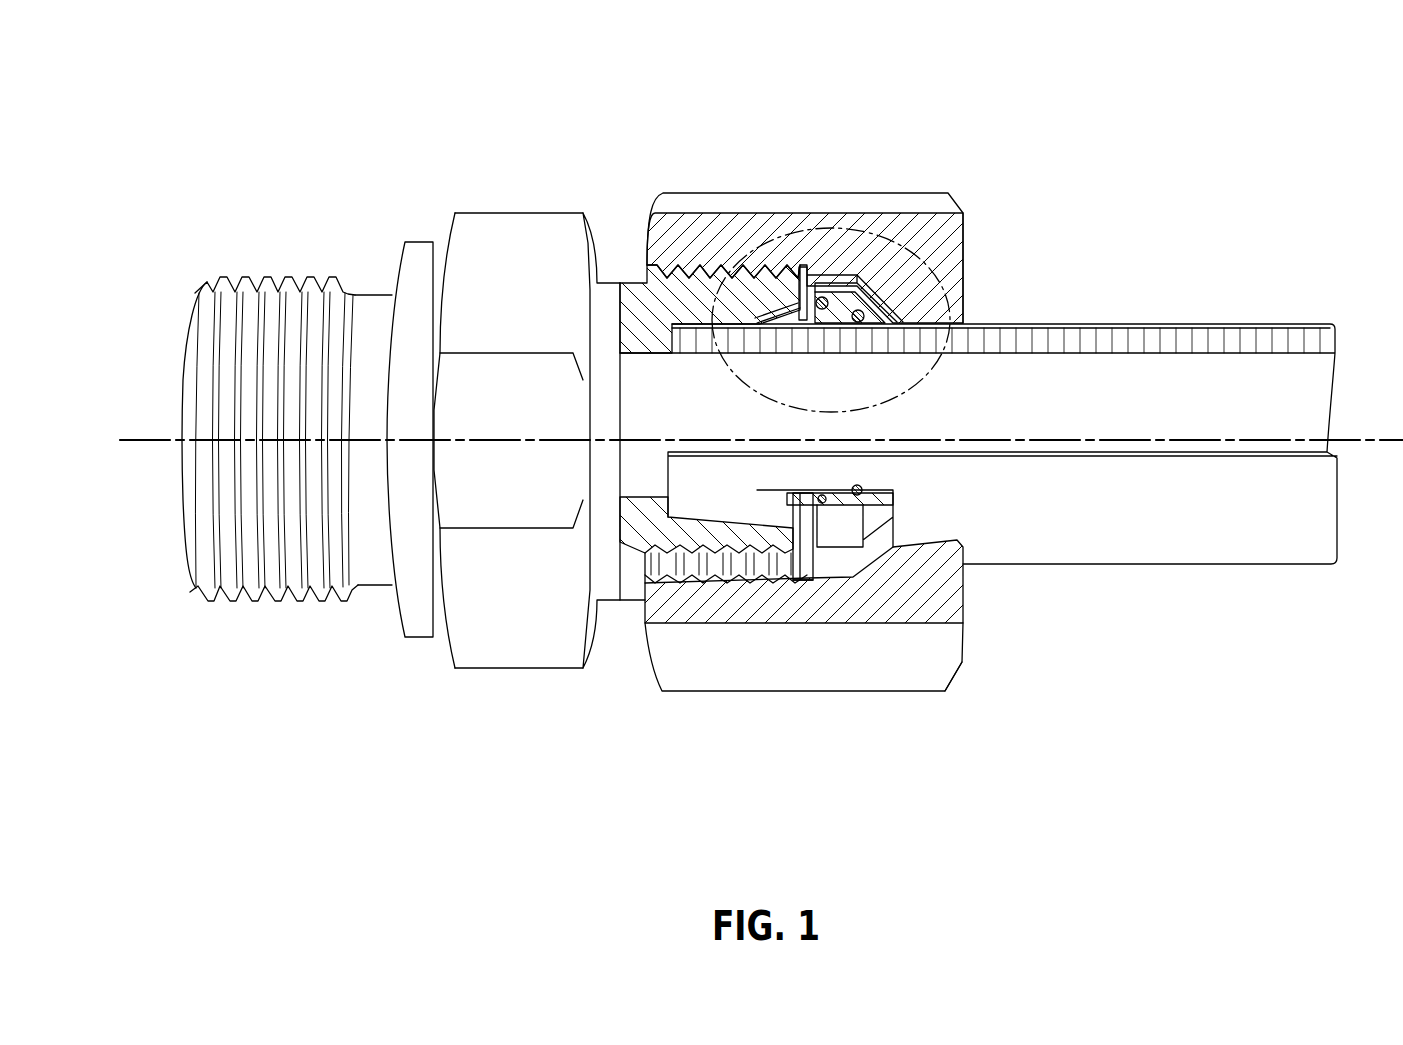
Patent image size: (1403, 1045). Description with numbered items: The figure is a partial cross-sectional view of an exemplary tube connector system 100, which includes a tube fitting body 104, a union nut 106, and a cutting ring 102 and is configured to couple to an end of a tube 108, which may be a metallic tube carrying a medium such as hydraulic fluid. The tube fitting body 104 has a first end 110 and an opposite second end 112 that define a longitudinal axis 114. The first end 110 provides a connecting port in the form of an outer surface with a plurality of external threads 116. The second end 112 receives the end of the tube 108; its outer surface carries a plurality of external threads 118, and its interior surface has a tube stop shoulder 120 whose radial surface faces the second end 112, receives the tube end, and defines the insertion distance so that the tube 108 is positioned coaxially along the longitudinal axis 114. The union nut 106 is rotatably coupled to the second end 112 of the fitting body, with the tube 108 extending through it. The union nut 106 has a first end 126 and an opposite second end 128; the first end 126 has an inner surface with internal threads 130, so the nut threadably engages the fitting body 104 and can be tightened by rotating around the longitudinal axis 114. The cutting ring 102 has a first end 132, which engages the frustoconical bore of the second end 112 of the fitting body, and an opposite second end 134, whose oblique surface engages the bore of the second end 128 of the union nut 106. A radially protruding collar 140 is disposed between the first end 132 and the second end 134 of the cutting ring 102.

The tube connector system 100 is at (1262, 82).
The cutting ring 102 is at (910, 541).
The tube fitting body 104 is at (405, 242).
The union nut 106 is at (703, 193).
The tube 108 is at (1252, 325).
The first end 110 is at (196, 588).
The second end 112 is at (793, 583).
The longitudinal axis 114 is at (134, 440).
The external threads 116 is at (246, 283).
The external threads 118 is at (666, 590).
The tube stop shoulder 120 is at (672, 335).
The first end 126 is at (662, 688).
The second end 128 is at (957, 676).
The internal threads 130 is at (697, 583).
The first end 132 is at (803, 267).
The second end 134 is at (905, 323).
The radially protruding collar 140 is at (850, 268).